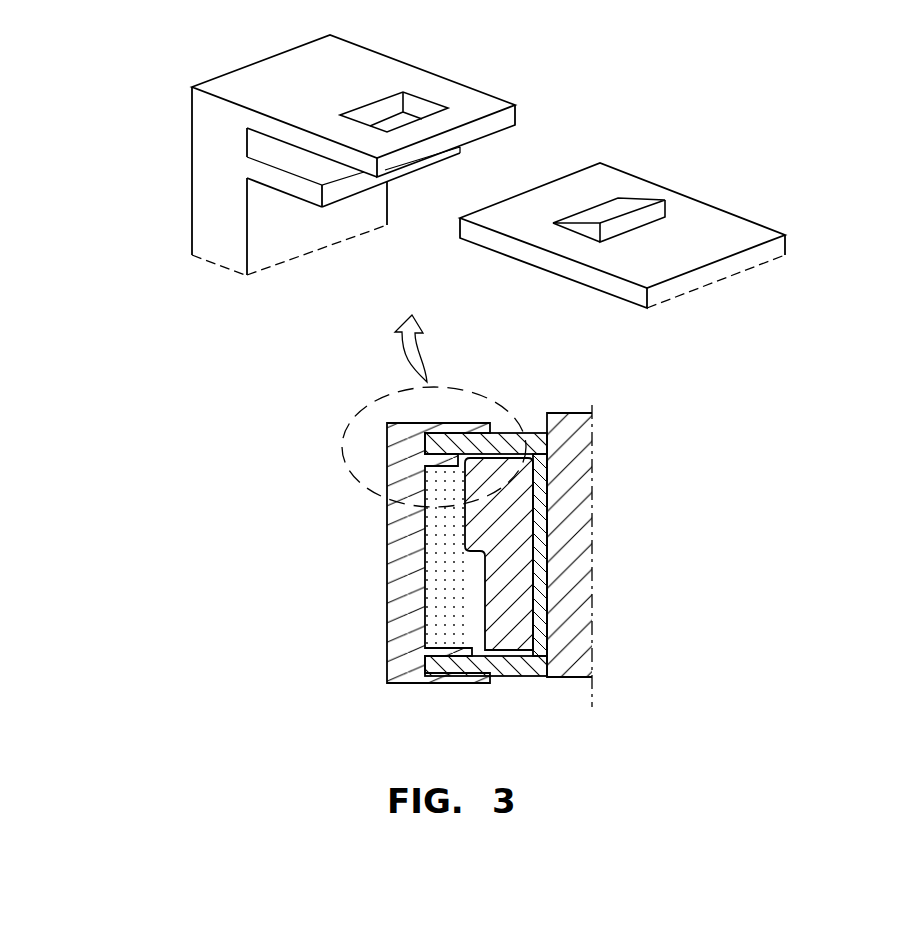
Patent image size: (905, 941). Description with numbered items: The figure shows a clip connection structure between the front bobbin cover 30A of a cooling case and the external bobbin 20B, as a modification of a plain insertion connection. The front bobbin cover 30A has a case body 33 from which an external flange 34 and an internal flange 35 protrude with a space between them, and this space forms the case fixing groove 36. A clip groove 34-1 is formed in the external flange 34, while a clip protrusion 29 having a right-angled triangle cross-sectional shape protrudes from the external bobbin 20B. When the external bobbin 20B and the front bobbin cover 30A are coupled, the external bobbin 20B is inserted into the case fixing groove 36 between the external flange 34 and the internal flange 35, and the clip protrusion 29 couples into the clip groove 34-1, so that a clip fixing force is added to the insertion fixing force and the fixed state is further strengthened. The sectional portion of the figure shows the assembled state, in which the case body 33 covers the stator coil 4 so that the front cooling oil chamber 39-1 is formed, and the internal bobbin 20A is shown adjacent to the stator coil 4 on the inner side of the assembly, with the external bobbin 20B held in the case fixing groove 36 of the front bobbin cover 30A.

The front bobbin cover 30A is at (158, 74).
The case body 33 is at (207, 210).
The external flange 34 is at (467, 102).
The clip groove 34-1 is at (393, 102).
The internal flange 35 is at (250, 182).
The case fixing groove 36 is at (247, 157).
The clip protrusion 29 is at (628, 203).
The external bobbin 20B is at (767, 201).
The internal bobbin 20A is at (515, 677).
The front cooling oil chamber 39-1 is at (423, 615).
The stator coil 4 is at (520, 517).